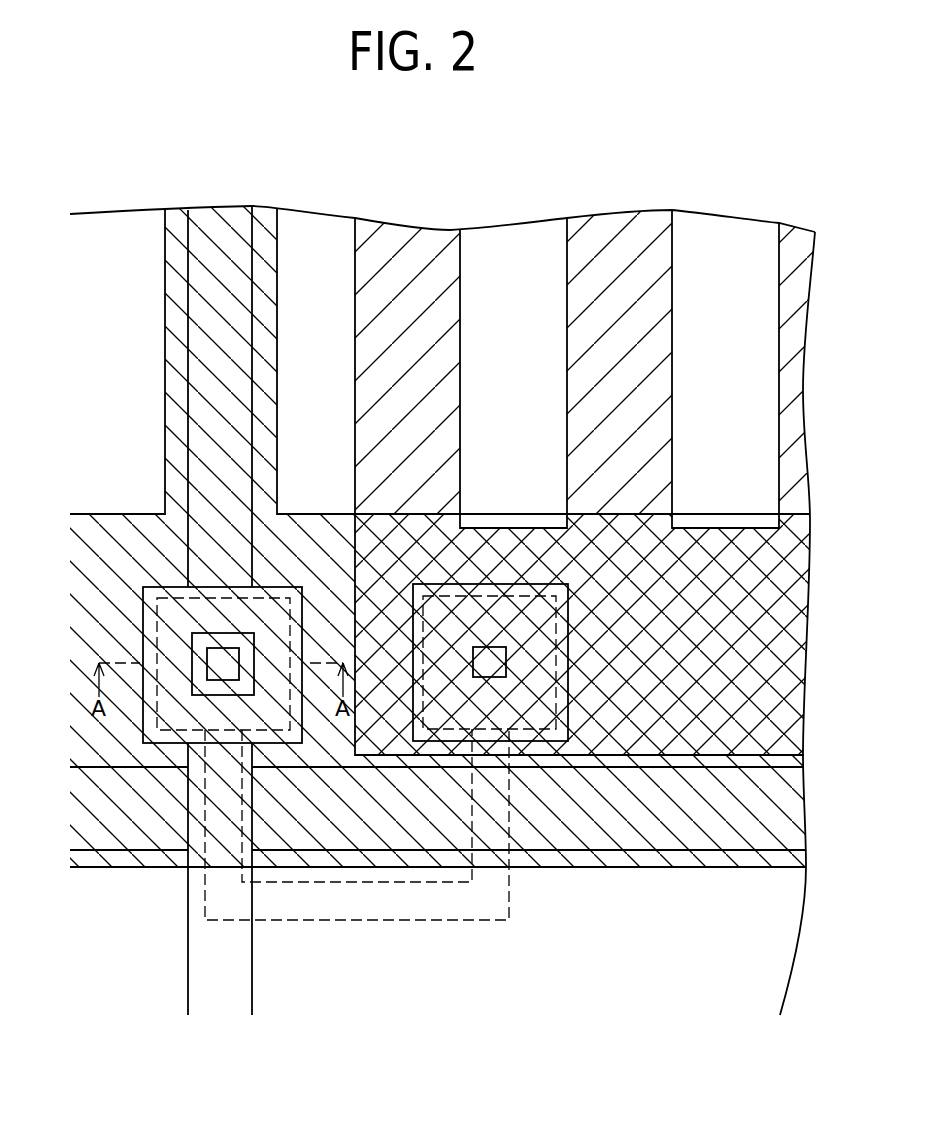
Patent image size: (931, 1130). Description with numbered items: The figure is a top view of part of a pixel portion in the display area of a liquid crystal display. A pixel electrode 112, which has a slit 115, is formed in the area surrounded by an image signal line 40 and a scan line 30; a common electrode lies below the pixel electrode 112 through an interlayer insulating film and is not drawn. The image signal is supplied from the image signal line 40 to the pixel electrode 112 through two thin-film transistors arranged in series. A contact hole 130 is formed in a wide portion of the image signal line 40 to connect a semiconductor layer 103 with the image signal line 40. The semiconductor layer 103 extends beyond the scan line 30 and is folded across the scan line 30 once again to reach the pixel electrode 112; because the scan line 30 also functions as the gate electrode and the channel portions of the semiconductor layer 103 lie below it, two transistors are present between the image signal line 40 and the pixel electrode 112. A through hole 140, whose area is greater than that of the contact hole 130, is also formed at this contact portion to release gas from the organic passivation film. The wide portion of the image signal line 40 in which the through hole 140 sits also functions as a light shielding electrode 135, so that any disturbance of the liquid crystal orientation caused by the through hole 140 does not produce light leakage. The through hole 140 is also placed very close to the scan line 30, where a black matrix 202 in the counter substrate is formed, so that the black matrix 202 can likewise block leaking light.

The black matrix 202 is at (277, 262).
The slit 115 is at (512, 252).
The image signal line 40 is at (205, 372).
The pixel electrode 112 is at (380, 372).
The light shielding electrode 135 is at (143, 598).
The through hole 140 is at (160, 640).
The contact hole 130 is at (205, 660).
The semiconductor layer 103 is at (175, 713).
The scan line 30 is at (118, 836).